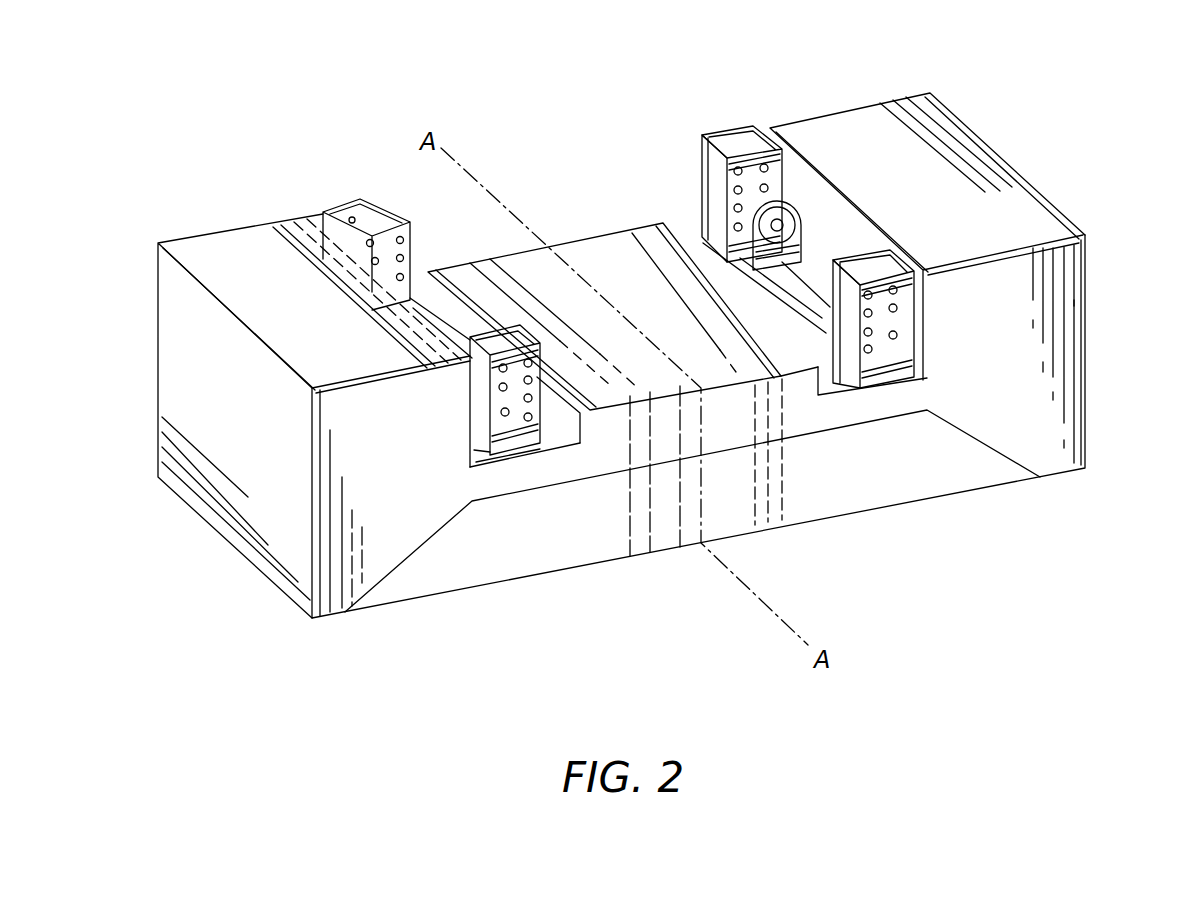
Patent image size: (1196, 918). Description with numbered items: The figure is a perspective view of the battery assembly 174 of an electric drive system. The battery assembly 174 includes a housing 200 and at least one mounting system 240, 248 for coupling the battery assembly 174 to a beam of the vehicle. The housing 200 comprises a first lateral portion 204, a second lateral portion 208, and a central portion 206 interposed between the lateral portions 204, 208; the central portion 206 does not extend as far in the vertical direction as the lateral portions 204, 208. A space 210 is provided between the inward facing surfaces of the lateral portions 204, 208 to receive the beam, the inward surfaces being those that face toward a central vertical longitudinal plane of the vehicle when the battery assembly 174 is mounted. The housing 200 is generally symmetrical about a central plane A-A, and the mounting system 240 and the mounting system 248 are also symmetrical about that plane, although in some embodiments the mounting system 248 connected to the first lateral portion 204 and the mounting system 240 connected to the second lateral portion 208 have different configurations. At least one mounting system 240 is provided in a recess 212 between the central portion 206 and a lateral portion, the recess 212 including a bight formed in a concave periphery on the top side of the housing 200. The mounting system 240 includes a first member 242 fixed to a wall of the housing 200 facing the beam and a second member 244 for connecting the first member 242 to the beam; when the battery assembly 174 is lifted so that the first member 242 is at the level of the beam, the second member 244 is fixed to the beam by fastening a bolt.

The battery assembly 174 is at (274, 103).
The housing 200 is at (1087, 383).
The first lateral portion 204 is at (228, 258).
The central portion 206 is at (470, 284).
The second lateral portion 208 is at (1002, 202).
The space 210 is at (637, 221).
The recess 212 is at (817, 318).
The mounting system 240 is at (836, 318).
The first member 242 is at (875, 310).
The second member 244 is at (710, 178).
The mounting system 248 is at (522, 443).